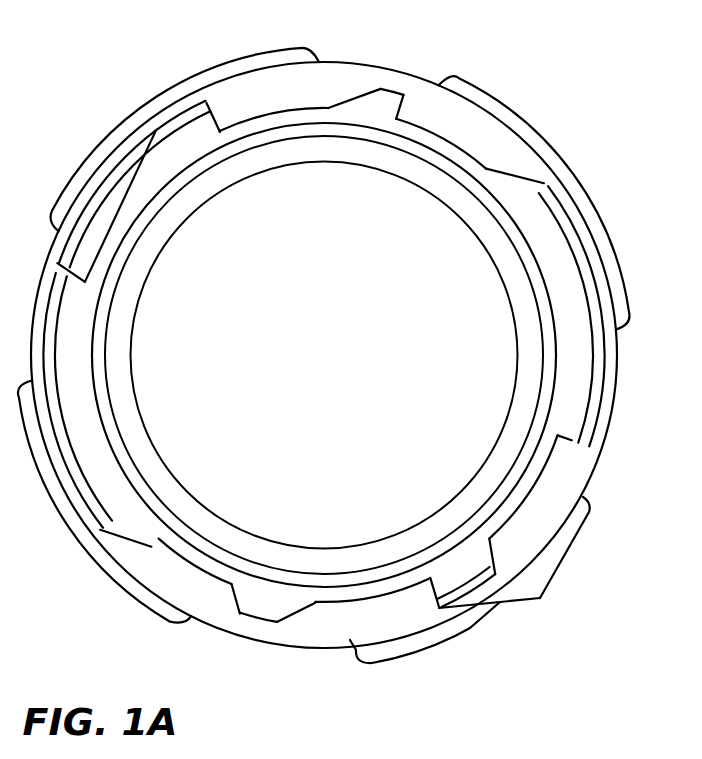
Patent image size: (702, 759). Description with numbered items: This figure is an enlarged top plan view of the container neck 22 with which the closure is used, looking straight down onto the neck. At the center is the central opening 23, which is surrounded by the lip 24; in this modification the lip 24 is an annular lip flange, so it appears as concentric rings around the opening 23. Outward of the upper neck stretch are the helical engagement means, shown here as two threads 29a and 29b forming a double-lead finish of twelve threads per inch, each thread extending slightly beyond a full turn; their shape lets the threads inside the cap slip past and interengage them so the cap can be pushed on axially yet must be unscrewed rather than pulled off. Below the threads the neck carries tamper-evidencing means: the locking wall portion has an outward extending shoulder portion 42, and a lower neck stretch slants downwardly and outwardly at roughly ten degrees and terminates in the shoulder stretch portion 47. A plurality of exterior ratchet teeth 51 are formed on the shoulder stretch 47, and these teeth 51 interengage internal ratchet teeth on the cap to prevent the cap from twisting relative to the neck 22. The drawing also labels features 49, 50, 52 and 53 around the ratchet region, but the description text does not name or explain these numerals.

The container neck 22 is at (128, 612).
The central opening 23 is at (374, 550).
The lip 24 is at (458, 510).
The thread 29a is at (505, 593).
The thread 29b is at (312, 120).
The shoulder portion 42 is at (331, 594).
The shoulder stretch portion 47 is at (573, 463).
The floor segment 49 is at (184, 140).
The raised segment 50 is at (459, 581).
The ratchet teeth 51 is at (365, 100).
The ramp 52 is at (207, 110).
The flat 53 is at (193, 115).